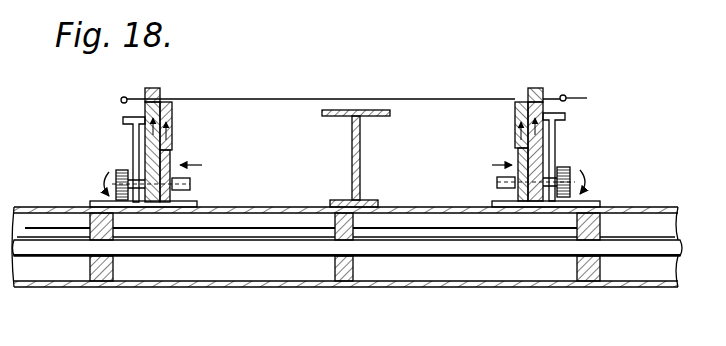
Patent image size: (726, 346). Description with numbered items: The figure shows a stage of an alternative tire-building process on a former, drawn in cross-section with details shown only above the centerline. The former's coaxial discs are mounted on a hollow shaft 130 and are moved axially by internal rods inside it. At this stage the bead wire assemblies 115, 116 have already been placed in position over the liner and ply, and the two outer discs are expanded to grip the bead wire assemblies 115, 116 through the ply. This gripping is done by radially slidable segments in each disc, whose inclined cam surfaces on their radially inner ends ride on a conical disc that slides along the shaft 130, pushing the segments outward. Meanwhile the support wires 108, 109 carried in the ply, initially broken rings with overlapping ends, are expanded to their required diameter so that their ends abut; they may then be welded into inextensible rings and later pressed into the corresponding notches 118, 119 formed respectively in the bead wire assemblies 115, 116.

The support wire 108 is at (121, 98).
The support wire 109 is at (588, 98).
The bead wire assembly 115 is at (160, 88).
The bead wire assembly 116 is at (540, 88).
The notch 118 is at (150, 88).
The notch 119 is at (541, 92).
The hollow shaft 130 is at (340, 288).